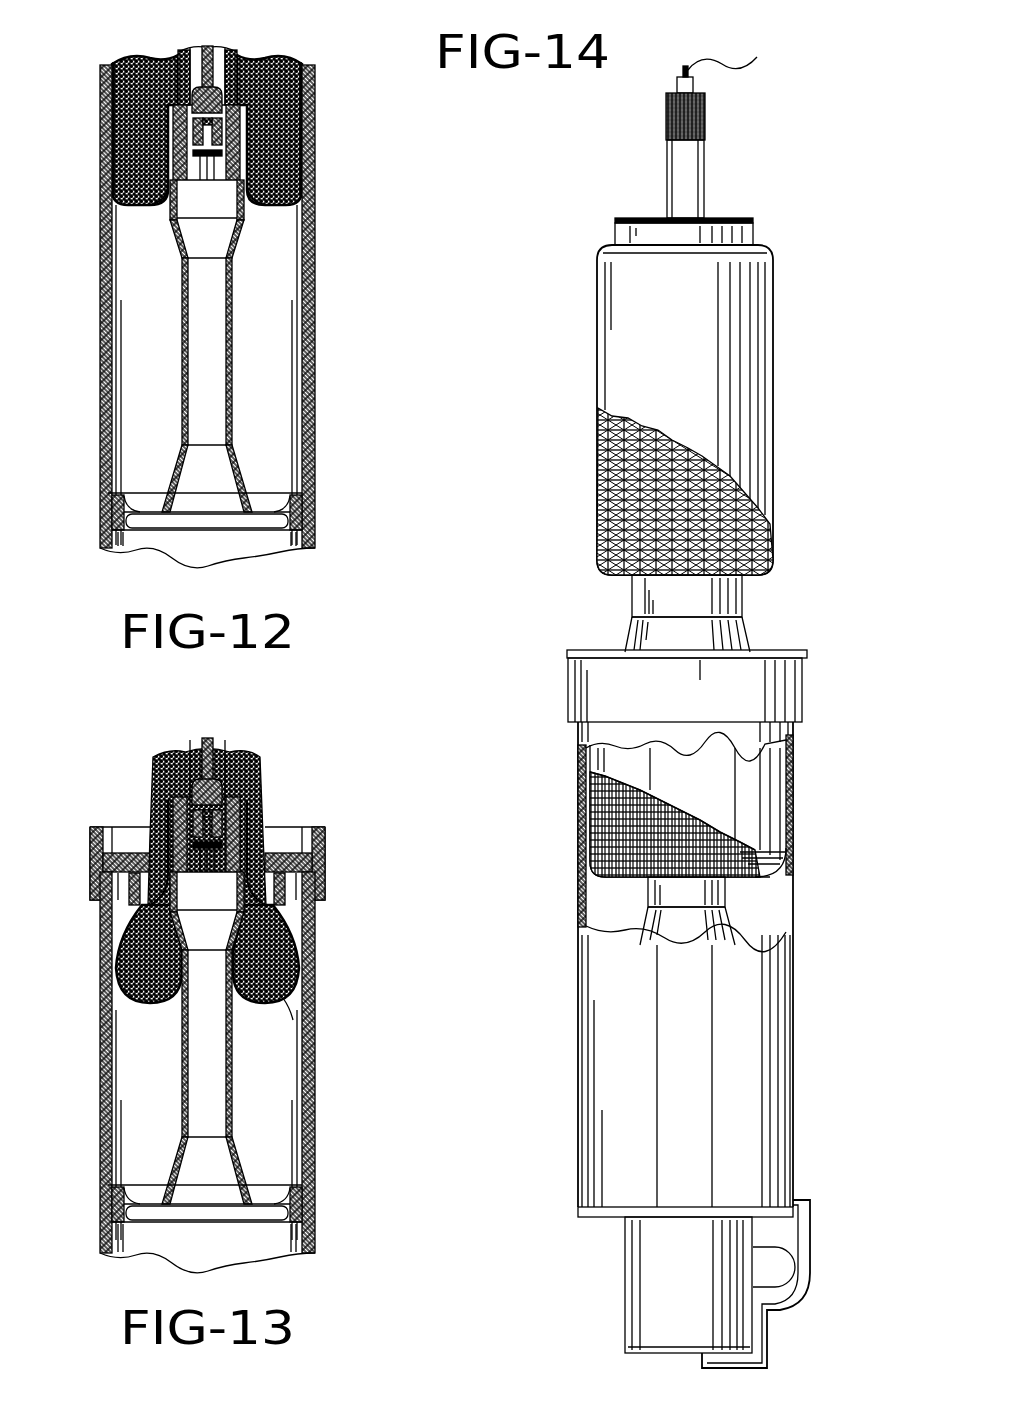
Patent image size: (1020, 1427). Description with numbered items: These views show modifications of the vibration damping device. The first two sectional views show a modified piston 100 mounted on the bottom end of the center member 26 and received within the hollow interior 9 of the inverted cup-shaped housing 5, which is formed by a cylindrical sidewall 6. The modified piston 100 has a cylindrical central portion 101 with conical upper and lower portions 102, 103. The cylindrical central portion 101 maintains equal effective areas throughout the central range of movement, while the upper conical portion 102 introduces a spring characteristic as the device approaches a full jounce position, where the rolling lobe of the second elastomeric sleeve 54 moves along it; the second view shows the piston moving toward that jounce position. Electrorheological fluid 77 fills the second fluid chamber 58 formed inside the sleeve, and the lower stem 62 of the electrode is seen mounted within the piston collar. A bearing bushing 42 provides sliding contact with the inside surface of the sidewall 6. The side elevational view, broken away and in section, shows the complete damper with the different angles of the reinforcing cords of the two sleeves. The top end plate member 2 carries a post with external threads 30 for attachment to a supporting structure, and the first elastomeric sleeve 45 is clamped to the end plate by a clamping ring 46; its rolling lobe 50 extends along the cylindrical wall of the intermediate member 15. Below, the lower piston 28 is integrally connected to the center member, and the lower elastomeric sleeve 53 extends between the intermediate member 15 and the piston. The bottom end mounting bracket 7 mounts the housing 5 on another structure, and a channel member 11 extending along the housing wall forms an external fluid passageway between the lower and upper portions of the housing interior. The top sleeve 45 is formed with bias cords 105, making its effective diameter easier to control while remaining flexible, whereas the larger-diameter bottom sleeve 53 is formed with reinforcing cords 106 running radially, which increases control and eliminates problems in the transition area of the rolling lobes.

In FIG. 14, the top end plate member 2 is at (685, 316).
In FIG. 13, the housing 5 is at (254, 1062).
In FIG. 14, the housing 5 is at (805, 1052).
In FIG. 12, the cylindrical sidewall 6 is at (312, 134).
In FIG. 13, the cylindrical sidewall 6 is at (312, 1236).
In FIG. 14, the bottom end mounting bracket 7 is at (800, 1232).
In FIG. 12, the hollow interior 9 is at (285, 545).
In FIG. 14, the channel member 11 is at (675, 1098).
In FIG. 14, the intermediate member 15 is at (755, 627).
In FIG. 12, the center member 26 is at (172, 72).
In FIG. 14, the piston 28 is at (737, 920).
In FIG. 14, the external threads 30 is at (706, 110).
In FIG. 13, the bearing bushing 42 is at (112, 1200).
In FIG. 14, the first elastomeric sleeve 45 is at (685, 410).
In FIG. 14, the clamping ring 46 is at (750, 234).
In FIG. 14, the rolling lobe 50 is at (760, 568).
In FIG. 12, the lower elastomeric sleeve 53 is at (297, 74).
In FIG. 14, the lower elastomeric sleeve 53 is at (765, 792).
In FIG. 13, the second elastomeric sleeve 54 is at (290, 1015).
In FIG. 14, the second elastomeric sleeve 54 is at (760, 870).
In FIG. 13, the second fluid chamber 58 is at (285, 960).
In FIG. 13, the lower stem 62 is at (200, 760).
In FIG. 12, the fluid 77 is at (280, 160).
In FIG. 13, the fluid 77 is at (130, 975).
In FIG. 12, the modified piston 100 is at (273, 346).
In FIG. 12, the cylindrical central portion 101 is at (238, 388).
In FIG. 12, the upper conical portion 102 is at (240, 234).
In FIG. 13, the upper conical portion 102 is at (178, 940).
In FIG. 12, the lower conical portion 103 is at (245, 472).
In FIG. 14, the bias cords 105 is at (612, 548).
In FIG. 14, the reinforcing cords 106 is at (612, 836).